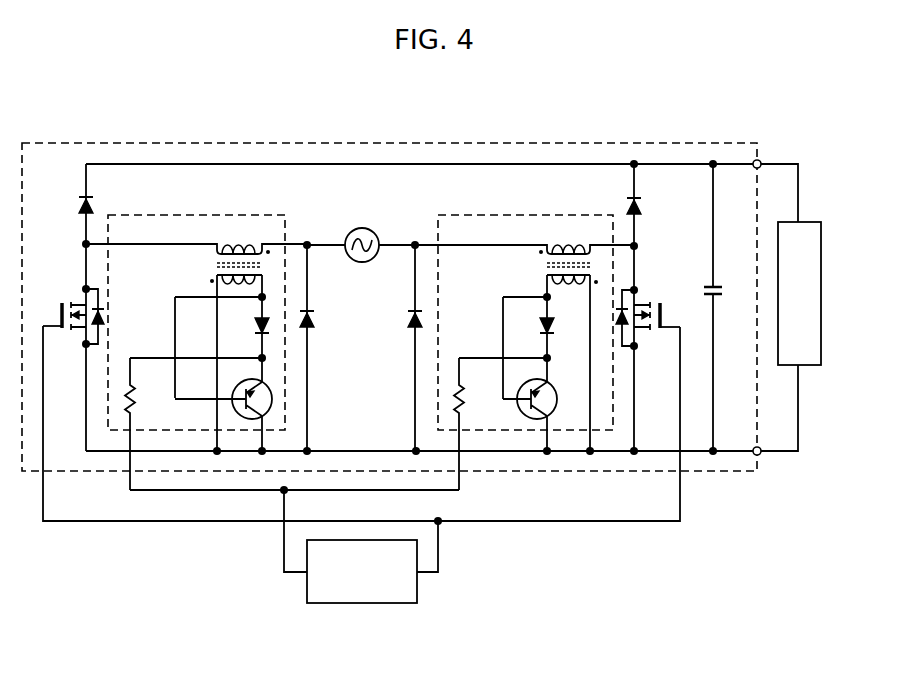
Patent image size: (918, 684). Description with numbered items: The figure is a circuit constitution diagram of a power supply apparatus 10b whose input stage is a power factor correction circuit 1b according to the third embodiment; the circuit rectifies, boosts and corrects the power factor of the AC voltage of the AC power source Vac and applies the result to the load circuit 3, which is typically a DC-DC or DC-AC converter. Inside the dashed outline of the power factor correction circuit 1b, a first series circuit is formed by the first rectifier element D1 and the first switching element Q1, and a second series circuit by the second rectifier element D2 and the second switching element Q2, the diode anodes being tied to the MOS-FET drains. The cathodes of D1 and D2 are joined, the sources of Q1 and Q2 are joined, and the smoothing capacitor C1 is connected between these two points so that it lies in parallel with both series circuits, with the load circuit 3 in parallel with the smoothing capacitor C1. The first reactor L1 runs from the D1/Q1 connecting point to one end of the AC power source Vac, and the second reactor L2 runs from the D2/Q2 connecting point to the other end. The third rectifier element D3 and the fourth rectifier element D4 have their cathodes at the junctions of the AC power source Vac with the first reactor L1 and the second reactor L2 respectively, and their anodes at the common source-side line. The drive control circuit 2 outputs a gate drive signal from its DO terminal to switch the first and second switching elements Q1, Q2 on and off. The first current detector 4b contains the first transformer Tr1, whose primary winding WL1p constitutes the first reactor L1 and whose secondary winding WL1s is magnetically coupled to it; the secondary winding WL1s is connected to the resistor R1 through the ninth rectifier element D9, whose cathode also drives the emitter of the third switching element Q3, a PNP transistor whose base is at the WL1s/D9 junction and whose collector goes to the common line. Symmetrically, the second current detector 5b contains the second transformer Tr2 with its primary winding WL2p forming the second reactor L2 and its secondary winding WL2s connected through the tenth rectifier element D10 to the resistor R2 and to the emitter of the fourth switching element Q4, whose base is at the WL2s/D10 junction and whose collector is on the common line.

The power supply apparatus 10b is at (62, 113).
The power factor correction circuit 1b is at (230, 143).
The drive control circuit 2 is at (362, 604).
The load circuit 3 is at (822, 247).
The first current detector 4b is at (500, 430).
The second current detector 5b is at (175, 430).
The first switching element Q1 is at (648, 324).
The second switching element Q2 is at (73, 324).
The third switching element Q3 is at (539, 404).
The fourth switching element Q4 is at (223, 404).
The first rectifier element D1 is at (646, 206).
The second rectifier element D2 is at (97, 205).
The third rectifier element D3 is at (403, 319).
The fourth rectifier element D4 is at (317, 319).
The ninth rectifier element D9 is at (534, 327).
The tenth rectifier element D10 is at (246, 327).
The resistor R1 is at (471, 424).
The resistor R2 is at (142, 424).
The smoothing capacitor C1 is at (725, 307).
The first transformer Tr1 is at (524, 316).
The second transformer Tr2 is at (196, 316).
The first reactor L1 is at (524, 218).
The second reactor L2 is at (196, 217).
The primary winding WL1p is at (577, 244).
The secondary winding WL1s is at (545, 285).
The primary winding WL2p is at (250, 243).
The secondary winding WL2s is at (209, 285).
The AC power source Vac is at (362, 257).